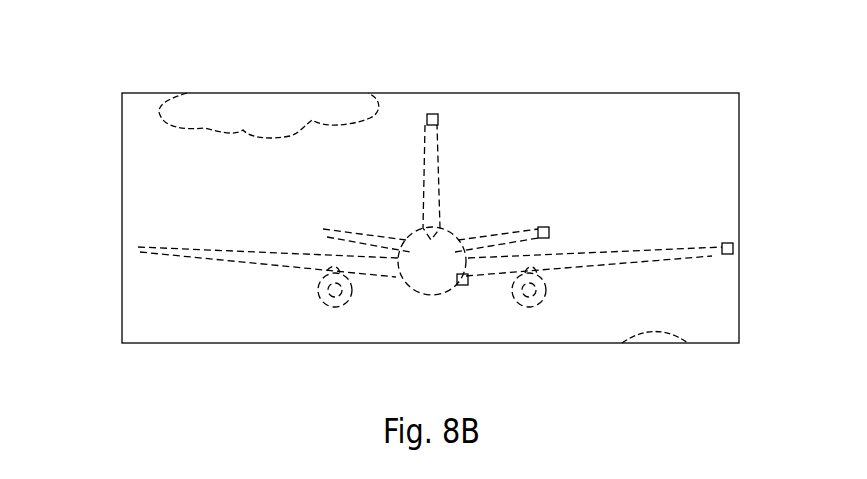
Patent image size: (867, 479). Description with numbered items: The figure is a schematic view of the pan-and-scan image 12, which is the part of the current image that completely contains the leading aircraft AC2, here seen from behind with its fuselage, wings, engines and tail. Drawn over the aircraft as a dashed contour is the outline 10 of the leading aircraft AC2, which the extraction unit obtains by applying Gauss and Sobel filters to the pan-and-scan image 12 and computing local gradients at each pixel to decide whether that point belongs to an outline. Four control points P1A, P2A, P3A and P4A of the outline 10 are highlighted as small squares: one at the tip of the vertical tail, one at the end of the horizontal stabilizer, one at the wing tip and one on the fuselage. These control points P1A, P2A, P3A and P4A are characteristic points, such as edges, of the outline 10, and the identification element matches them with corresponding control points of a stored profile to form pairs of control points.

The pan-and-scan image 12 is at (122, 155).
The outline 10 is at (437, 168).
The leading aircraft AC2 is at (388, 305).
The control point P1A is at (438, 114).
The control point P2A is at (550, 228).
The control point P3A is at (730, 243).
The control point P4A is at (463, 286).